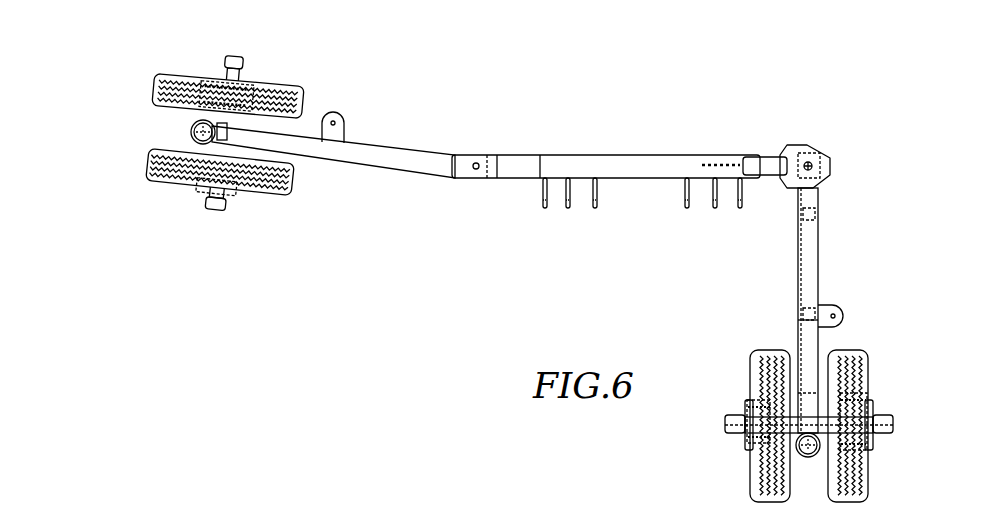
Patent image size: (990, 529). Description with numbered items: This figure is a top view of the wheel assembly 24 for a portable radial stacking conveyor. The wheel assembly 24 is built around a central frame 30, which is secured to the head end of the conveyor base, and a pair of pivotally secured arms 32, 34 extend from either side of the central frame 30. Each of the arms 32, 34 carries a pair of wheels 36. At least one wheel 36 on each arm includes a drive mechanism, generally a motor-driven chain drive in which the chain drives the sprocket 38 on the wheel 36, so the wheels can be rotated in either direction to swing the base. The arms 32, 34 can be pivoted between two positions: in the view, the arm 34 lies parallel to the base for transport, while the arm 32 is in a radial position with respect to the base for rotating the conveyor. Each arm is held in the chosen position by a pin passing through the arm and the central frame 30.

The wheel assembly 24 is at (509, 246).
The central frame 30 is at (615, 165).
The arm 32 is at (380, 150).
The arm 34 is at (820, 237).
The wheels 36 is at (282, 85).
The sprocket 38 is at (210, 68).